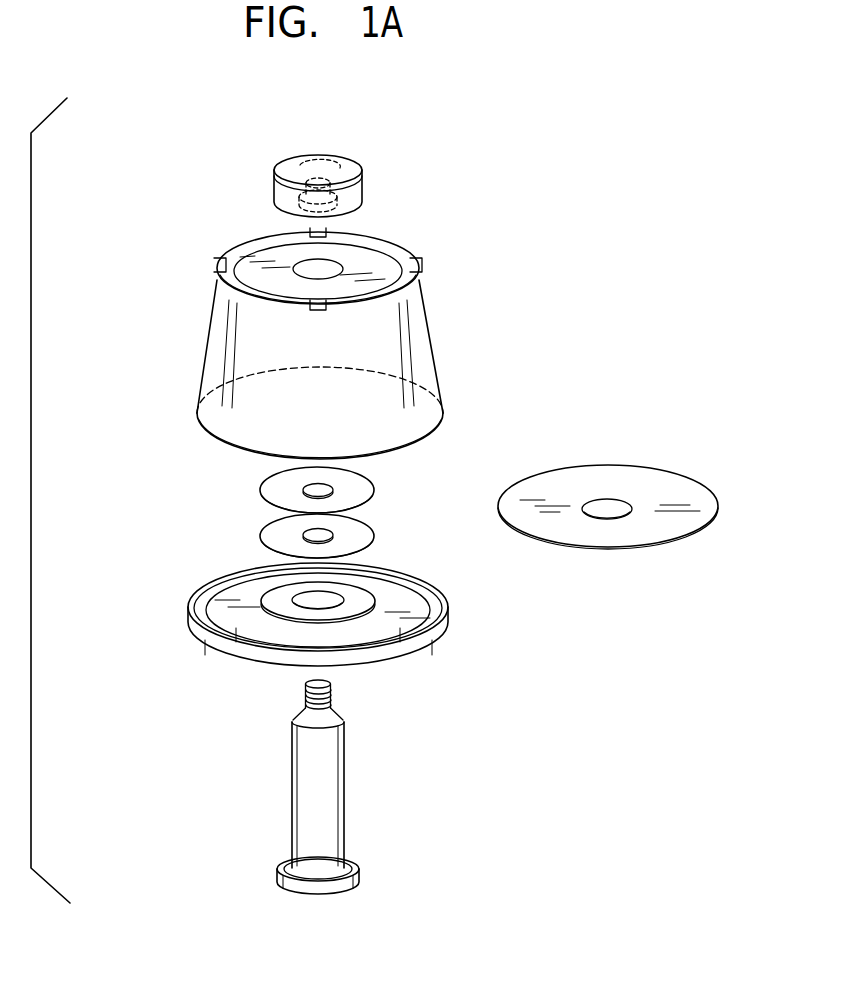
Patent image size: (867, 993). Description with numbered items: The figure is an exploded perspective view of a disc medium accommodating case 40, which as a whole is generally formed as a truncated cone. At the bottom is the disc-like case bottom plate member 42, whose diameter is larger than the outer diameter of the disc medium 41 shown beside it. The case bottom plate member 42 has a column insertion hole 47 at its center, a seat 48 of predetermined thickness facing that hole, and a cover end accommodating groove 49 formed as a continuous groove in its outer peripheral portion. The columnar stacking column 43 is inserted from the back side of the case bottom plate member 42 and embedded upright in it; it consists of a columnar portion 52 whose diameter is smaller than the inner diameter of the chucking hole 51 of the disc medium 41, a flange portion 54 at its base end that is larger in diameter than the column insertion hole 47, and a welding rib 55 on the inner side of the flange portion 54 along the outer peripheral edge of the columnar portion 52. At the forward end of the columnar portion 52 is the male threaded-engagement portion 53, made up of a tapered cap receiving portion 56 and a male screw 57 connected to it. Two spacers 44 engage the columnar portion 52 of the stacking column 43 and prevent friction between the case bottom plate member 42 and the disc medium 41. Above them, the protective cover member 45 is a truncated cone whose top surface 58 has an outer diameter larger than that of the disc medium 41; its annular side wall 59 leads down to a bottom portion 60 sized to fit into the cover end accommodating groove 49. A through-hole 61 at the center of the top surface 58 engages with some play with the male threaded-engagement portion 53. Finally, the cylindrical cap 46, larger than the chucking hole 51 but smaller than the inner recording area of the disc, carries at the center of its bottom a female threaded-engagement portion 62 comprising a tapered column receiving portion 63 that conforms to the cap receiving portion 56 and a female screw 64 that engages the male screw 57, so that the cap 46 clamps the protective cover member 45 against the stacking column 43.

The disc medium accommodating case 40 is at (597, 229).
The disc medium 41 is at (634, 480).
The case bottom plate member 42 is at (326, 604).
The stacking column 43 is at (333, 785).
The spacers 44 is at (357, 487).
The protective cover member 45 is at (341, 336).
The cap 46 is at (318, 174).
The column insertion hole 47 is at (325, 597).
The seat 48 is at (268, 597).
The cover end accommodating groove 49 is at (200, 612).
The chucking hole 51 is at (604, 507).
The columnar portion 52 is at (338, 753).
The male threaded-engagement portion 53 is at (325, 692).
The flange portion 54 is at (325, 871).
The welding rib 55 is at (283, 871).
The cap receiving portion 56 is at (292, 712).
The male screw 57 is at (305, 694).
The top surface 58 is at (378, 263).
The annular side wall 59 is at (437, 363).
The bottom portion 60 is at (437, 437).
The through-hole 61 is at (305, 267).
The female threaded-engagement portion 62 is at (287, 191).
The column receiving portion 63 is at (347, 214).
The female screw 64 is at (362, 164).